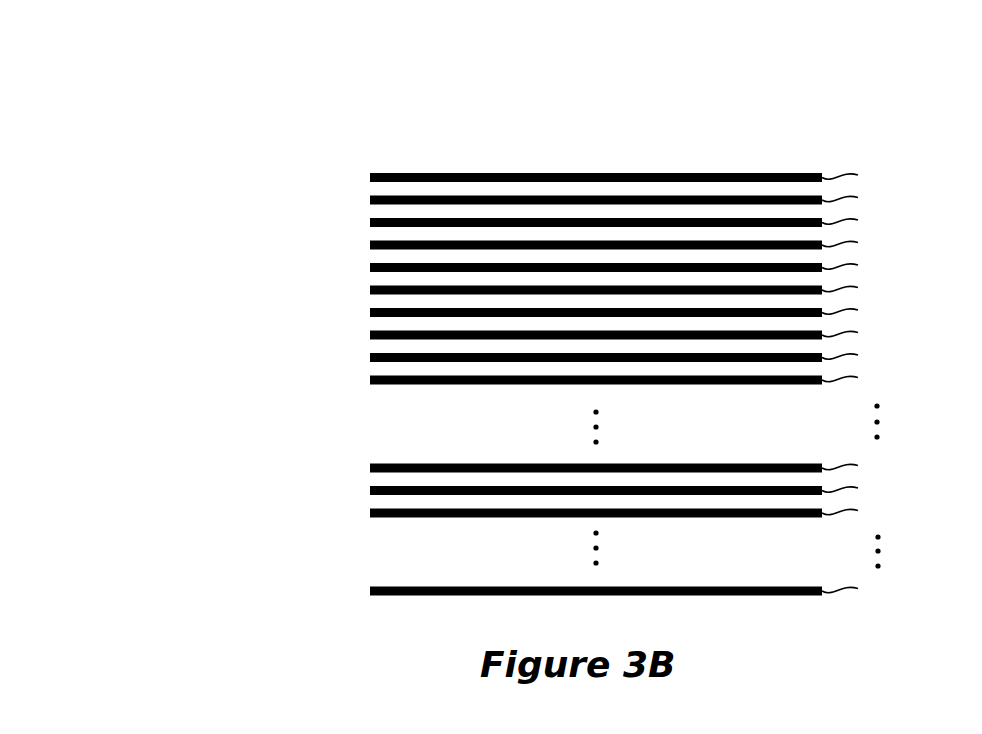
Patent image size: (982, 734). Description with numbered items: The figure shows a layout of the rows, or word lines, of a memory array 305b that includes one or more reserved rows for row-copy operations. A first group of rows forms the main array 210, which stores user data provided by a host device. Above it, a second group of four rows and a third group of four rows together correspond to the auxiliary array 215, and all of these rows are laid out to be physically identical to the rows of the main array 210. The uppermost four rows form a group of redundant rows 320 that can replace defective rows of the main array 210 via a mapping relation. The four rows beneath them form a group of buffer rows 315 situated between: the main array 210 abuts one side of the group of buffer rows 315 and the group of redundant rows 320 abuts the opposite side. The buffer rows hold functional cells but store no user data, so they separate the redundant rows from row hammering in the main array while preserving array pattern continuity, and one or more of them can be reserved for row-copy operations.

The memory array 305b is at (204, 149).
The auxiliary array 215 is at (265, 172).
The group of redundant rows 320 is at (345, 172).
The group of buffer rows 315 is at (345, 262).
The main array 210 is at (345, 352).